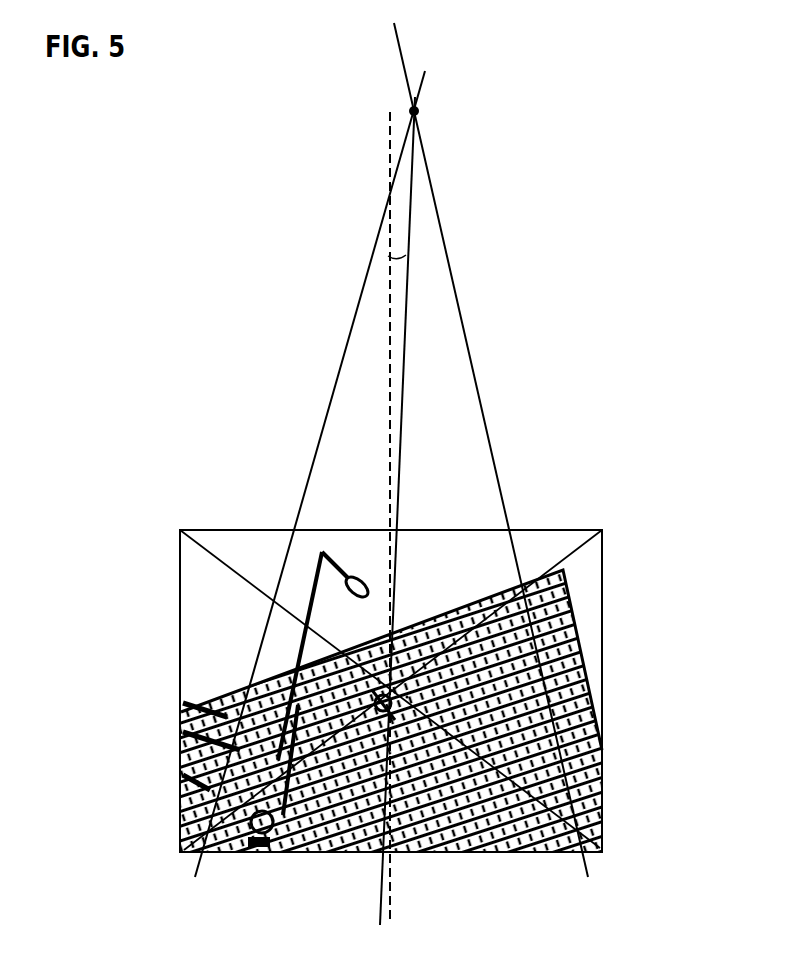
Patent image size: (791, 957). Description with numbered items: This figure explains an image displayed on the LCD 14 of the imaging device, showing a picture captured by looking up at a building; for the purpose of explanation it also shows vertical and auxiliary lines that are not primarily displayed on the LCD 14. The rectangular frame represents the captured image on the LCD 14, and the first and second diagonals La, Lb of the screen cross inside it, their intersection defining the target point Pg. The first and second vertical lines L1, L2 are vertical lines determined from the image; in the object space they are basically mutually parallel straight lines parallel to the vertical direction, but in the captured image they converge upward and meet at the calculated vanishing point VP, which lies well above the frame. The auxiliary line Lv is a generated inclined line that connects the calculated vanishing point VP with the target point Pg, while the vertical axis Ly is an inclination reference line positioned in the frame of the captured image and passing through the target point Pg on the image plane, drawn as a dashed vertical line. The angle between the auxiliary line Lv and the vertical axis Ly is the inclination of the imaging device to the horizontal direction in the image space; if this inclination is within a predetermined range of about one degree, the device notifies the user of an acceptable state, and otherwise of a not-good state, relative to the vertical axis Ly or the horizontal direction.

The LCD 14 is at (250, 510).
The vanishing point VP is at (430, 104).
The first vertical line L1 is at (327, 418).
The second vertical line L2 is at (487, 423).
The auxiliary line Lv is at (403, 418).
The vertical axis Ly is at (388, 433).
The first diagonal La is at (181, 530).
The second diagonal Lb is at (602, 530).
The target point Pg is at (416, 698).